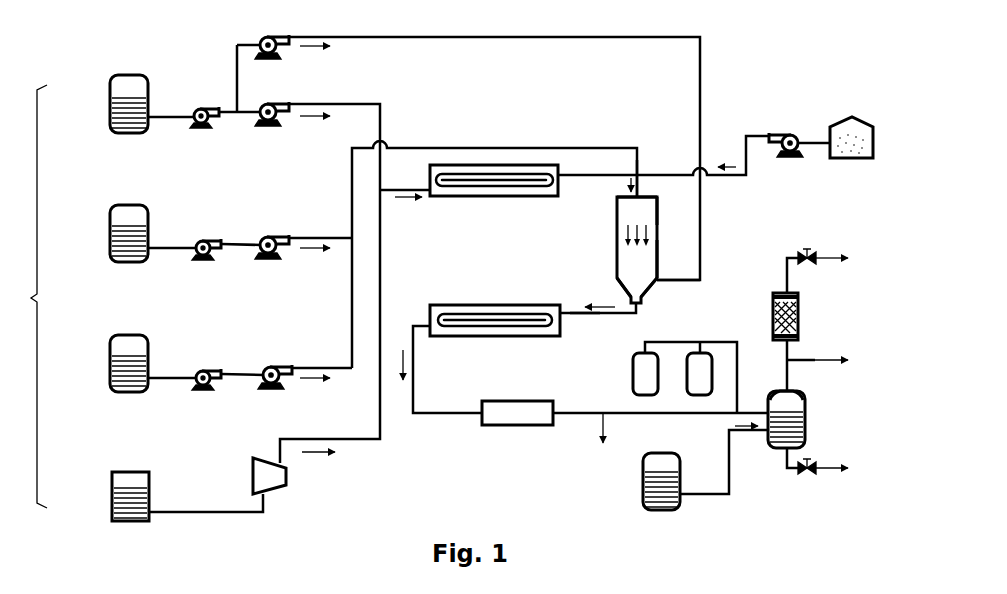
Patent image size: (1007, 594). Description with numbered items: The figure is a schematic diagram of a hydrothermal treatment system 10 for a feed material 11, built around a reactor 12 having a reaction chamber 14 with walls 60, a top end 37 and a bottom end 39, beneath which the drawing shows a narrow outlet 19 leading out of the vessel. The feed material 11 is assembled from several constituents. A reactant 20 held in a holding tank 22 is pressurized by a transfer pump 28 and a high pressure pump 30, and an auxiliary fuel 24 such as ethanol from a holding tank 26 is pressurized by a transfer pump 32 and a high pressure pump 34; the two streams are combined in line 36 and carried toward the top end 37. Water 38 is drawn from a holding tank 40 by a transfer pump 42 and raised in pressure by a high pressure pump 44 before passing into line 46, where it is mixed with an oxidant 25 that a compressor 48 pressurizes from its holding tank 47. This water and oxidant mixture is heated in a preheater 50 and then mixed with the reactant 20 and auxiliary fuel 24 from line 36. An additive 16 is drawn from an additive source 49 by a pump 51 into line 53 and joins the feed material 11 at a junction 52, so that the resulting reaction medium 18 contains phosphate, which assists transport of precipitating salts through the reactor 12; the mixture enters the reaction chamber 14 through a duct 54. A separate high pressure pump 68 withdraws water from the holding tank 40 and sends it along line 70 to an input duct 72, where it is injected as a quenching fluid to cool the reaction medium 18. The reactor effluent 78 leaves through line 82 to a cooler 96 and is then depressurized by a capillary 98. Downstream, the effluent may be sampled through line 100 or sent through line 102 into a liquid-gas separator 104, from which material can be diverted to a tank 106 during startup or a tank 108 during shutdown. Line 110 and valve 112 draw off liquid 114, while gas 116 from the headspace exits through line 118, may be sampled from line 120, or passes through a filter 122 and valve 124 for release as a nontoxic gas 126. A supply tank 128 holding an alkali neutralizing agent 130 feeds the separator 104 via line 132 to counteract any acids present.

The hydrothermal treatment system 10 is at (824, 51).
The feed material 11 is at (25, 296).
The reactor 12 is at (657, 226).
The reaction chamber 14 is at (645, 212).
The additive 16 is at (873, 140).
The reaction medium 18 is at (625, 230).
The reactor outlet 19 is at (648, 290).
The reactant 20 is at (110, 382).
The holding tank 22 is at (110, 348).
The auxiliary fuel 24 is at (110, 252).
The oxidant 25 is at (112, 498).
The holding tank 26 is at (110, 218).
The transfer pump 28 is at (205, 370).
The high pressure pump 30 is at (271, 366).
The transfer pump 32 is at (205, 240).
The high pressure pump 34 is at (268, 236).
The line 36 is at (352, 190).
The top end 37 is at (617, 197).
The water 38 is at (110, 130).
The bottom end 39 is at (626, 288).
The holding tank 40 is at (110, 80).
The transfer pump 42 is at (206, 108).
The high pressure pump 44 is at (267, 103).
The line 46 is at (382, 258).
The holding tank 47 is at (133, 472).
The compressor 48 is at (283, 488).
The additive source 49 is at (845, 160).
The preheater 50 is at (505, 197).
The pump 51 is at (790, 158).
The junction 52 is at (640, 168).
The line 53 is at (752, 133).
The duct 54 is at (640, 184).
The walls 60 is at (657, 250).
The high pressure pump 68 is at (268, 36).
The line 70 is at (700, 81).
The input duct 72 is at (657, 282).
The reactor effluent 78 is at (638, 303).
The line 82 is at (600, 314).
The cooler 96 is at (500, 337).
The capillary 98 is at (518, 426).
The line 100 is at (622, 430).
The line 102 is at (627, 412).
The liquid-gas separator 104 is at (805, 420).
The tank 106 is at (702, 352).
The tank 108 is at (632, 372).
The line 110 is at (786, 462).
The valve 112 is at (806, 475).
The liquid 114 is at (805, 430).
The gas 116 is at (805, 400).
The line 118 is at (787, 373).
The line 120 is at (816, 360).
The filter 122 is at (798, 315).
The valve 124 is at (810, 252).
The nontoxic gas 126 is at (822, 260).
The supply tank 128 is at (643, 487).
The alkali neutralizing agent 130 is at (665, 505).
The line 132 is at (728, 450).